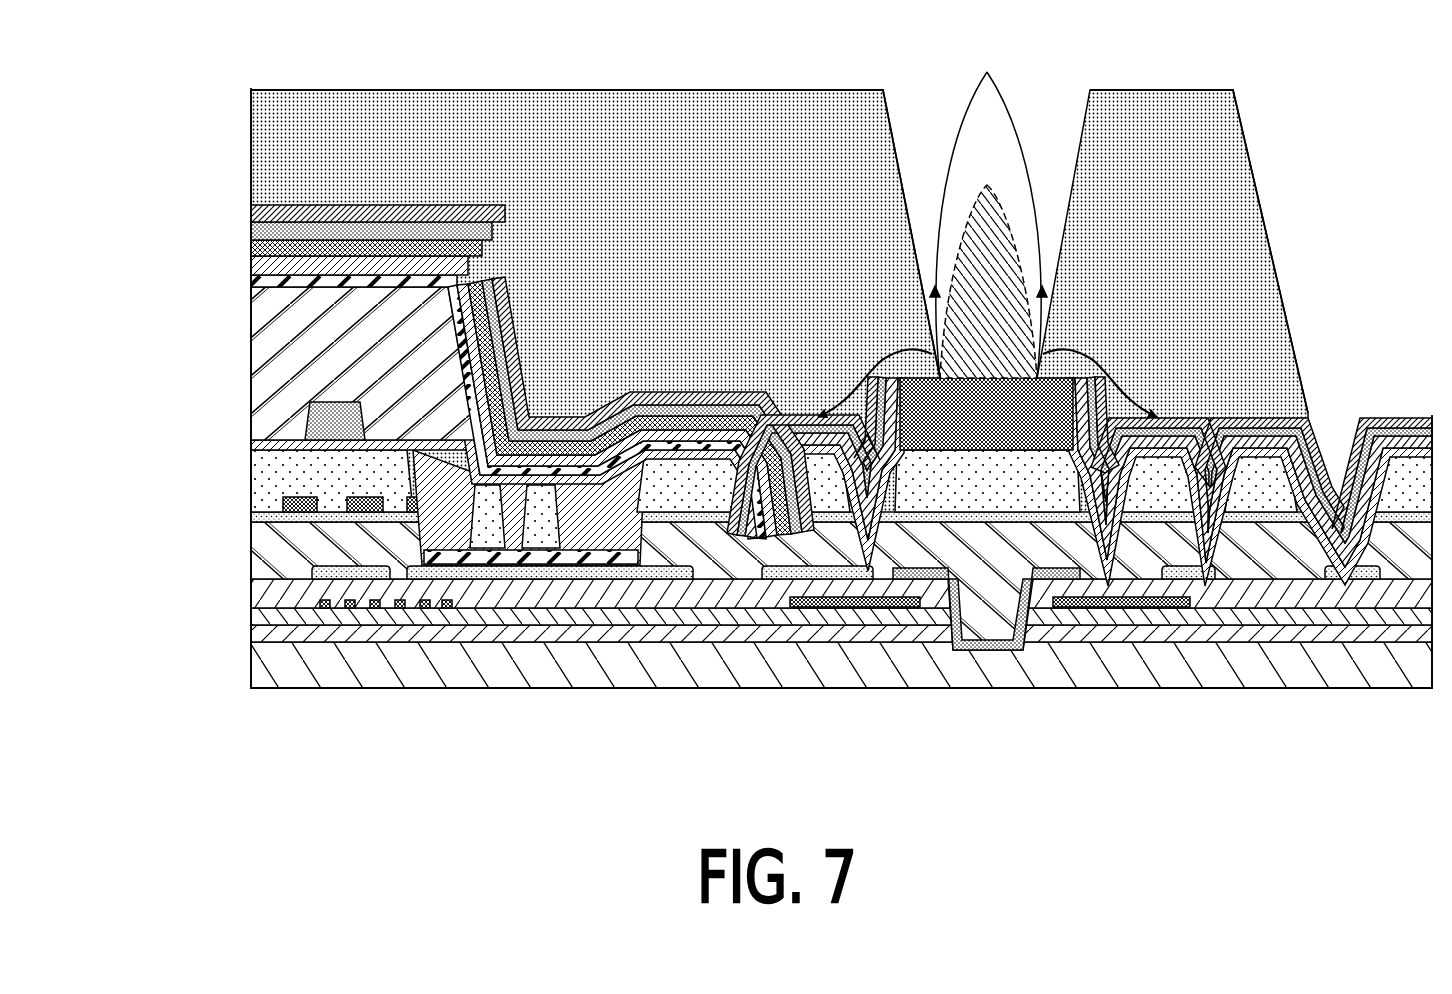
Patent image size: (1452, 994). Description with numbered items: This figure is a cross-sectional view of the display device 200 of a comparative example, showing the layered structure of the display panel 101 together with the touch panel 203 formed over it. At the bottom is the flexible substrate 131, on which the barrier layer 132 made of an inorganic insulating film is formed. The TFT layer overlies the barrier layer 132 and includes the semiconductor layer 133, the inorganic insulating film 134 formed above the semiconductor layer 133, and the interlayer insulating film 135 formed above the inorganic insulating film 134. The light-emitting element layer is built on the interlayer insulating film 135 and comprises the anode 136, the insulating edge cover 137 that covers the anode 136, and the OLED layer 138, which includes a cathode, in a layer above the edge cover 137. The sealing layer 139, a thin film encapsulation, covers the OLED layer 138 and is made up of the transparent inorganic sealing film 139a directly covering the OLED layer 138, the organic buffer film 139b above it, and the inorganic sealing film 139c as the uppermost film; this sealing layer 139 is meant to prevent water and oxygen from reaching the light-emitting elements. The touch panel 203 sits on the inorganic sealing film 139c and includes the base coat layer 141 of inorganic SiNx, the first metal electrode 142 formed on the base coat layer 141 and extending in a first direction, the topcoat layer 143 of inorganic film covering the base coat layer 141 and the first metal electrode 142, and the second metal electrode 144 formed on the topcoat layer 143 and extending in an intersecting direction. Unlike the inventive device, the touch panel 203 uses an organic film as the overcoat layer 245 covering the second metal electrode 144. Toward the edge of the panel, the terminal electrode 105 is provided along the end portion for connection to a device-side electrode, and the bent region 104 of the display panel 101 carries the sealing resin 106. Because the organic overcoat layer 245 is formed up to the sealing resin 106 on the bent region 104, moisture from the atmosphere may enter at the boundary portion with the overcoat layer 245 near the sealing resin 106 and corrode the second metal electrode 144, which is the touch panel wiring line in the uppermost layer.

The display device 200 is at (1332, 84).
The display panel 101 is at (118, 340).
The touch panel 203 is at (118, 115).
The overcoat layer 245 is at (262, 133).
The second metal electrode 144 is at (250, 213).
The topcoat layer 143 is at (250, 232).
The first metal electrode 142 is at (250, 250).
The base coat layer 141 is at (250, 268).
The sealing layer 139 is at (172, 285).
The inorganic sealing film 139a is at (312, 418).
The organic buffer film 139b is at (262, 357).
The inorganic sealing film 139c is at (250, 283).
The OLED layer 138 is at (255, 444).
The edge cover 137 is at (262, 481).
The anode 136 is at (255, 517).
The interlayer insulating film 135 is at (262, 548).
The inorganic insulating film 134 is at (262, 592).
The semiconductor layer 133 is at (262, 618).
The barrier layer 132 is at (262, 636).
The flexible substrate 131 is at (262, 668).
The bent region 104 is at (1087, 695).
The terminal electrode 105 is at (1425, 695).
The sealing resin 106 is at (987, 183).